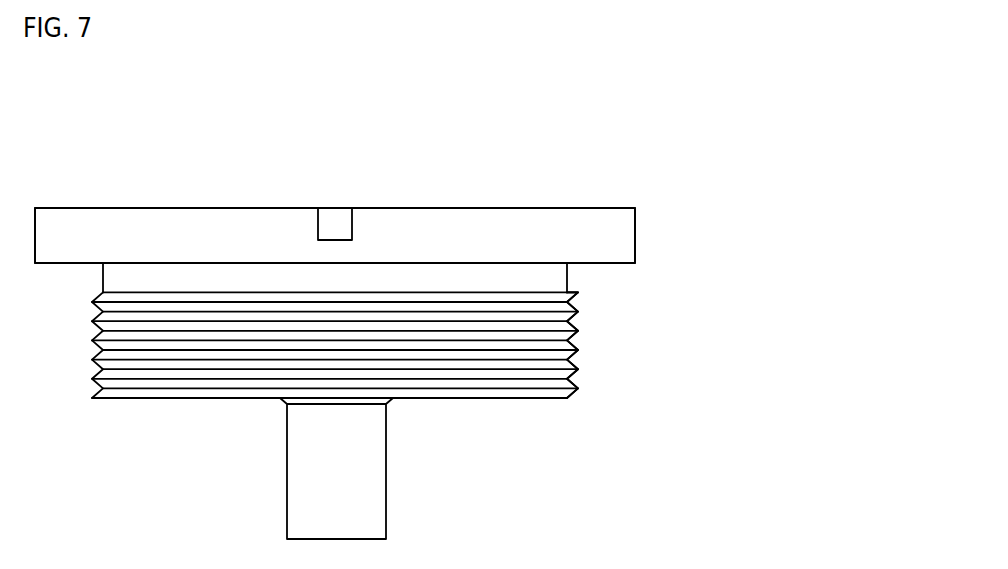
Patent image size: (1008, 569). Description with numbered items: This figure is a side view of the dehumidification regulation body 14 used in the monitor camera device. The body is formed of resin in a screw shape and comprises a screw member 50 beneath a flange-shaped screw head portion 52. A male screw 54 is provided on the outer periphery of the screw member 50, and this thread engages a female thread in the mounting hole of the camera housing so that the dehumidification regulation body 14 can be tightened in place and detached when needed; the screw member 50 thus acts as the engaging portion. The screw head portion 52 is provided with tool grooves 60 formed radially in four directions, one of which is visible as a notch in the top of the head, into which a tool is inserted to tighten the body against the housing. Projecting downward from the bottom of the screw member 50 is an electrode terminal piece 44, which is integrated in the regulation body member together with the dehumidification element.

The dehumidification regulation body 14 is at (598, 151).
The screw head portion 52 is at (622, 242).
The tool grooves 60 is at (335, 225).
The screw member 50 is at (604, 318).
The male screw 54 is at (578, 378).
The electrode terminal piece 44 is at (375, 477).